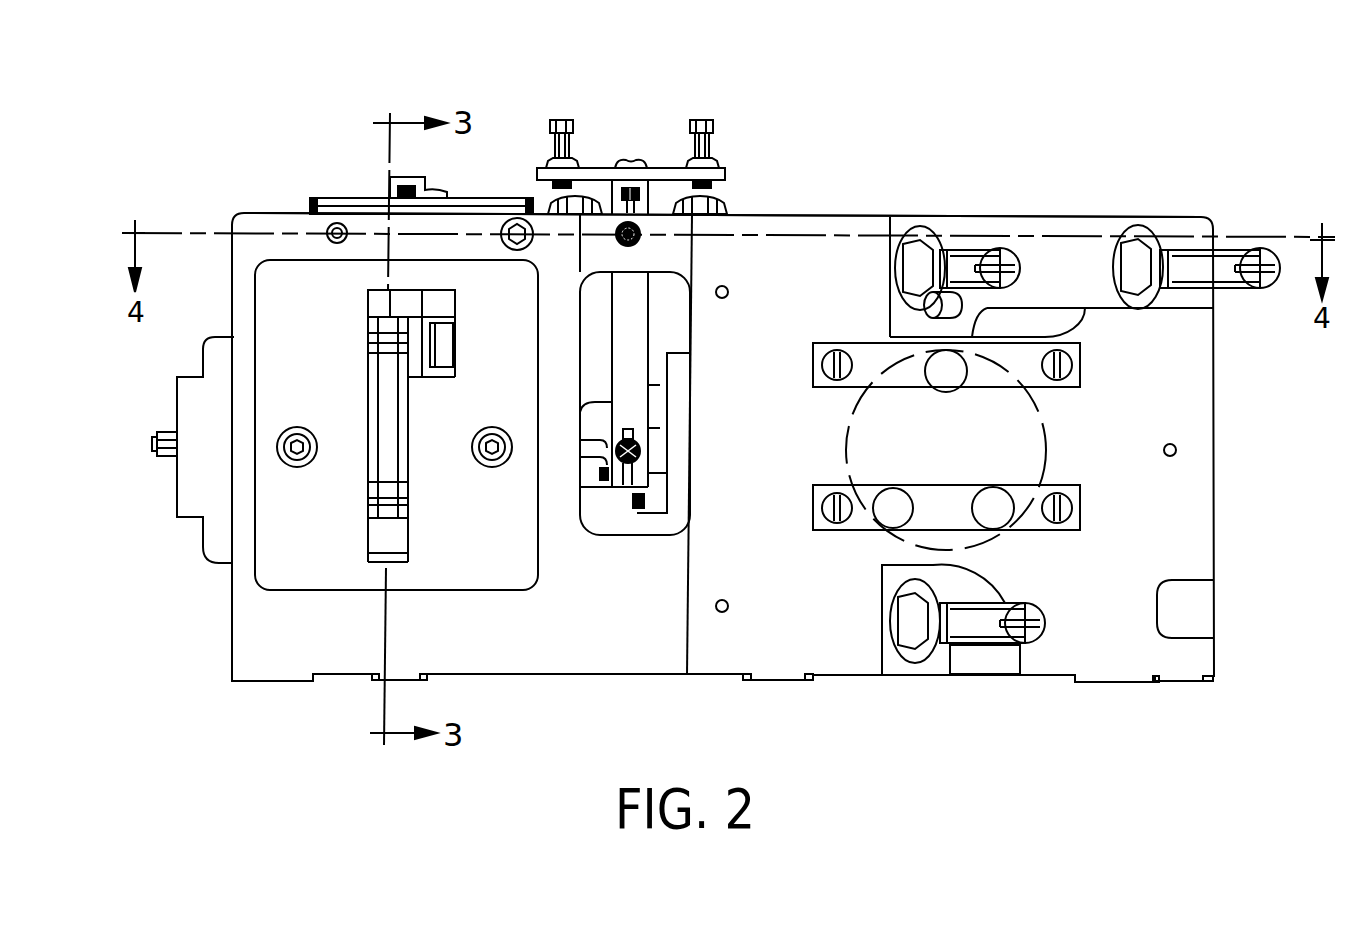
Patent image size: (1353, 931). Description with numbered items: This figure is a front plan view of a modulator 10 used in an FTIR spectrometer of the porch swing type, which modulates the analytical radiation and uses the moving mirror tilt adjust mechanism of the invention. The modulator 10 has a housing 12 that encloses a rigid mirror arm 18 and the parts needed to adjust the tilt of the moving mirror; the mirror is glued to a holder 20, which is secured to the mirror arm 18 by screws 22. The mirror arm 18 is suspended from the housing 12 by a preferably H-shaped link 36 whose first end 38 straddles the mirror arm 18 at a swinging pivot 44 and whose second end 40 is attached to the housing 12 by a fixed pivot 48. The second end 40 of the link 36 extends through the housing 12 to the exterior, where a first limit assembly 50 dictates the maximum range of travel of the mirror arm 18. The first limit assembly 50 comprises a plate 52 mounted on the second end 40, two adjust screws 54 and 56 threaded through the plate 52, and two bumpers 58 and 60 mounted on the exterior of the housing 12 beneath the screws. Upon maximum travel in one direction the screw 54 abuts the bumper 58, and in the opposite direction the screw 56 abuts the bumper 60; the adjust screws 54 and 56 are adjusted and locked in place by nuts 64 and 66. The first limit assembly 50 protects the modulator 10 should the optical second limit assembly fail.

The modulator 10 is at (676, 676).
The housing 12 is at (818, 215).
The mirror arm 18 is at (590, 403).
The holder 20 is at (652, 387).
The screws 22 is at (645, 503).
The link 36 is at (650, 325).
The first end 38 is at (650, 472).
The second end 40 is at (652, 207).
The swinging pivot 44 is at (640, 453).
The fixed pivot 48 is at (640, 244).
The first limit assembly 50 is at (537, 177).
The plate 52 is at (660, 167).
The adjust screw 54 is at (562, 118).
The adjust screw 56 is at (702, 118).
The bumper 58 is at (577, 205).
The bumper 60 is at (727, 207).
The nut 64 is at (556, 163).
The nut 66 is at (707, 163).